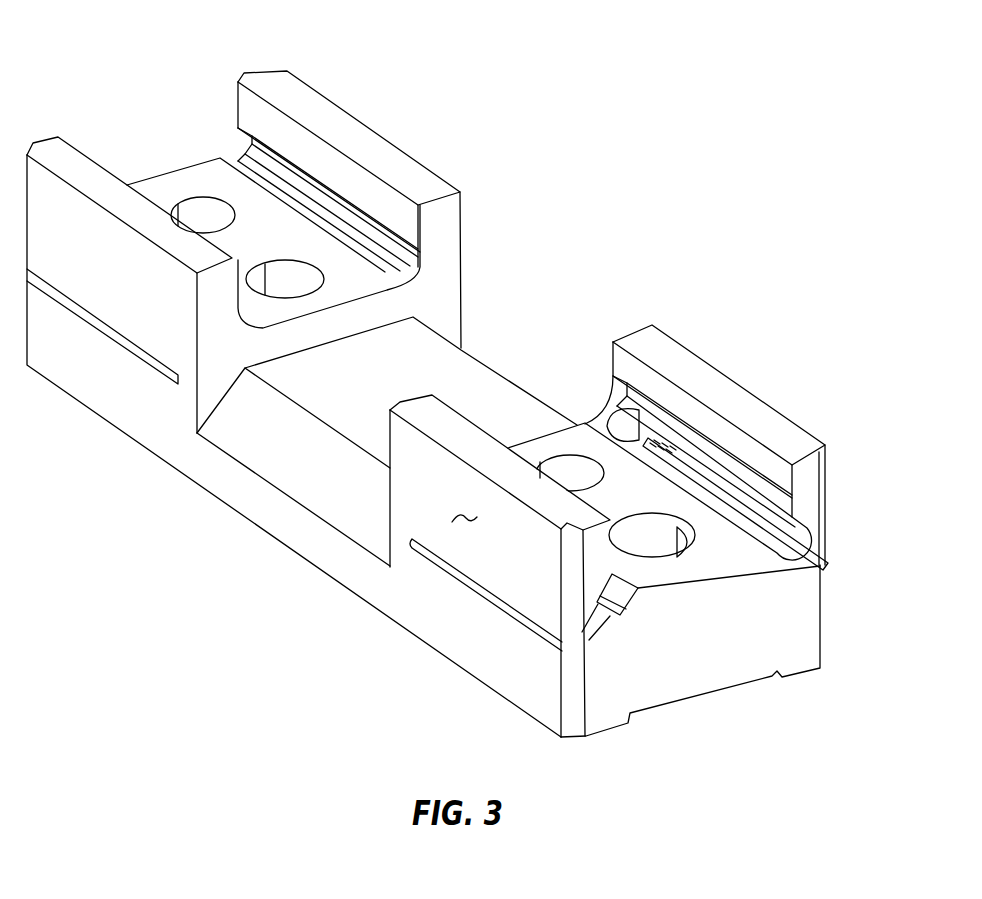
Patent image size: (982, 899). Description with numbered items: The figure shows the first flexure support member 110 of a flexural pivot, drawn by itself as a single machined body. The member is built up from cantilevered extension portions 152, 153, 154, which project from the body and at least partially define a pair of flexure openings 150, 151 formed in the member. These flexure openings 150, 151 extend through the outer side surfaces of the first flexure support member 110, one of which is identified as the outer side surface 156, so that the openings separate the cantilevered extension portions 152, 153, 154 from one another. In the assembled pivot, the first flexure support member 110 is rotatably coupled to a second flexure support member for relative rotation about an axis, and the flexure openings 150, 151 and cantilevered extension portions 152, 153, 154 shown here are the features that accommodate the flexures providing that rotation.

The first flexure support member 110 is at (626, 188).
The flexure opening 150 is at (318, 193).
The flexure opening 151 is at (108, 343).
The cantilevered extension portion 152 is at (327, 110).
The cantilevered extension portion 153 is at (180, 185).
The cantilevered extension portion 154 is at (62, 215).
The outer side surface 156 is at (455, 522).